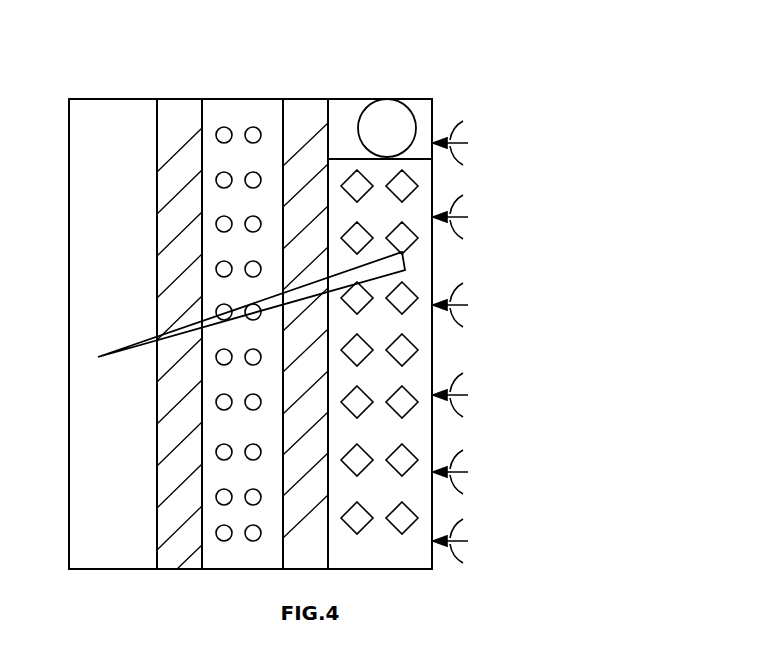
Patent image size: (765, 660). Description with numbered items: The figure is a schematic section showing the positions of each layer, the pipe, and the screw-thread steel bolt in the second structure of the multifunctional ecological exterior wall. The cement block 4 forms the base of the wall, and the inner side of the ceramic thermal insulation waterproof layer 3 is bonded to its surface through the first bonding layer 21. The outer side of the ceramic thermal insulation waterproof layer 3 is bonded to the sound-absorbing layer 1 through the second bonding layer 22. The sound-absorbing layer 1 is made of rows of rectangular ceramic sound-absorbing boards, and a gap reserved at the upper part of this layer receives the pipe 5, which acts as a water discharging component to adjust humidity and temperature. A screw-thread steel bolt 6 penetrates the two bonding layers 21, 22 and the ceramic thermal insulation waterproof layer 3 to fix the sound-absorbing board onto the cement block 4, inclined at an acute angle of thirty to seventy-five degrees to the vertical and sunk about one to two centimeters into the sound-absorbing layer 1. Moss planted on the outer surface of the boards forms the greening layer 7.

The sound-absorbing layer 1 is at (360, 98).
The first bonding layer 21 is at (173, 98).
The second bonding layer 22 is at (310, 98).
The ceramic thermal insulation waterproof layer 3 is at (238, 98).
The cement block 4 is at (100, 98).
The pipe 5 is at (417, 98).
The screw-thread steel bolt 6 is at (404, 266).
The greening layer 7 is at (455, 118).